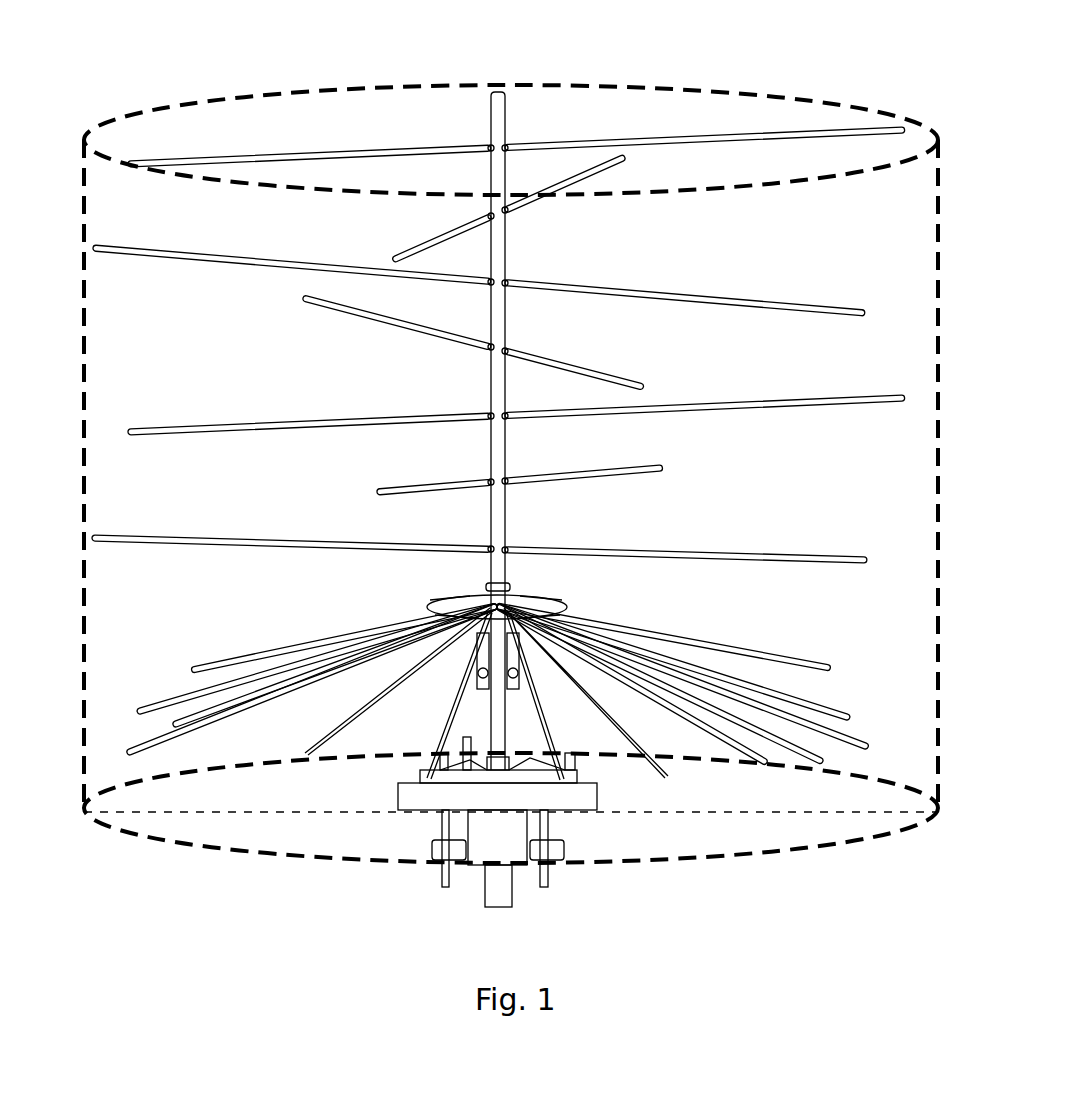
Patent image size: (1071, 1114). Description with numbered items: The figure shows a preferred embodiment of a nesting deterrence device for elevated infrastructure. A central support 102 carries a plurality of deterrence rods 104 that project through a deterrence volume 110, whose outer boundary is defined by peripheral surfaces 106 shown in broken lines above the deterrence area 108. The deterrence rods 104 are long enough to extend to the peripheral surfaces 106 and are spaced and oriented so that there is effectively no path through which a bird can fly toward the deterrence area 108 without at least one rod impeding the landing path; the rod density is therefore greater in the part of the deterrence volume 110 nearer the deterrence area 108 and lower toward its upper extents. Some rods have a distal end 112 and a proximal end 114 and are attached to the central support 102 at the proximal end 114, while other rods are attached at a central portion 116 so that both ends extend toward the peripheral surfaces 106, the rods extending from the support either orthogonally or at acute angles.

The central support 102 is at (505, 240).
The deterrence rods 104 is at (715, 132).
The peripheral surfaces 106 is at (85, 360).
The deterrence area 108 is at (315, 833).
The deterrence volume 110 is at (108, 738).
The distal end 112 is at (815, 668).
The proximal end 114 is at (545, 605).
The central portion 116 is at (520, 545).